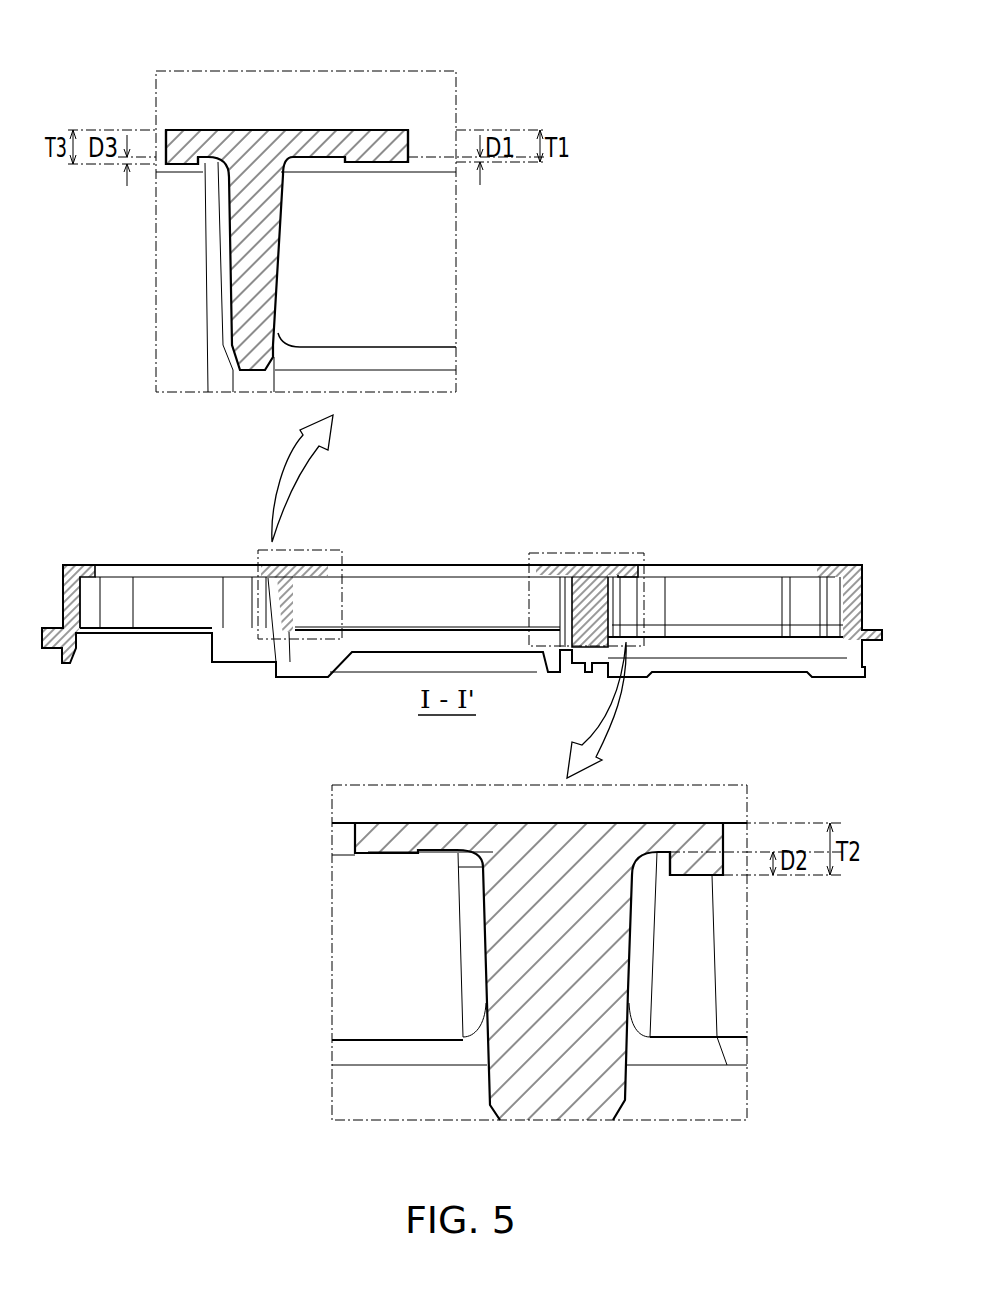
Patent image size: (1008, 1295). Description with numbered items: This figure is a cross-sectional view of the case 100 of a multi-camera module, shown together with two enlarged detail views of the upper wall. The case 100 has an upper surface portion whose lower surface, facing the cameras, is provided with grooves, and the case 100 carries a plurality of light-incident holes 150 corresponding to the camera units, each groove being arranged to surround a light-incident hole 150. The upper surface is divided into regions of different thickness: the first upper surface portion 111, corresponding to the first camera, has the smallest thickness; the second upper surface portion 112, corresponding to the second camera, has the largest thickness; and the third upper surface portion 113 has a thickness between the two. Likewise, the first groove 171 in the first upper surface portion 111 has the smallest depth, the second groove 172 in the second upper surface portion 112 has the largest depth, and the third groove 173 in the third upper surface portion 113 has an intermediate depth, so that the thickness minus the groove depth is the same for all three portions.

The case 100 is at (170, 449).
The first upper surface portion 111 is at (365, 145).
The second upper surface portion 112 is at (702, 845).
The third upper surface portion 113 is at (188, 140).
The light-incident hole 150 is at (442, 144).
The first groove 171 is at (308, 160).
The second groove 172 is at (663, 855).
The third groove 173 is at (205, 175).